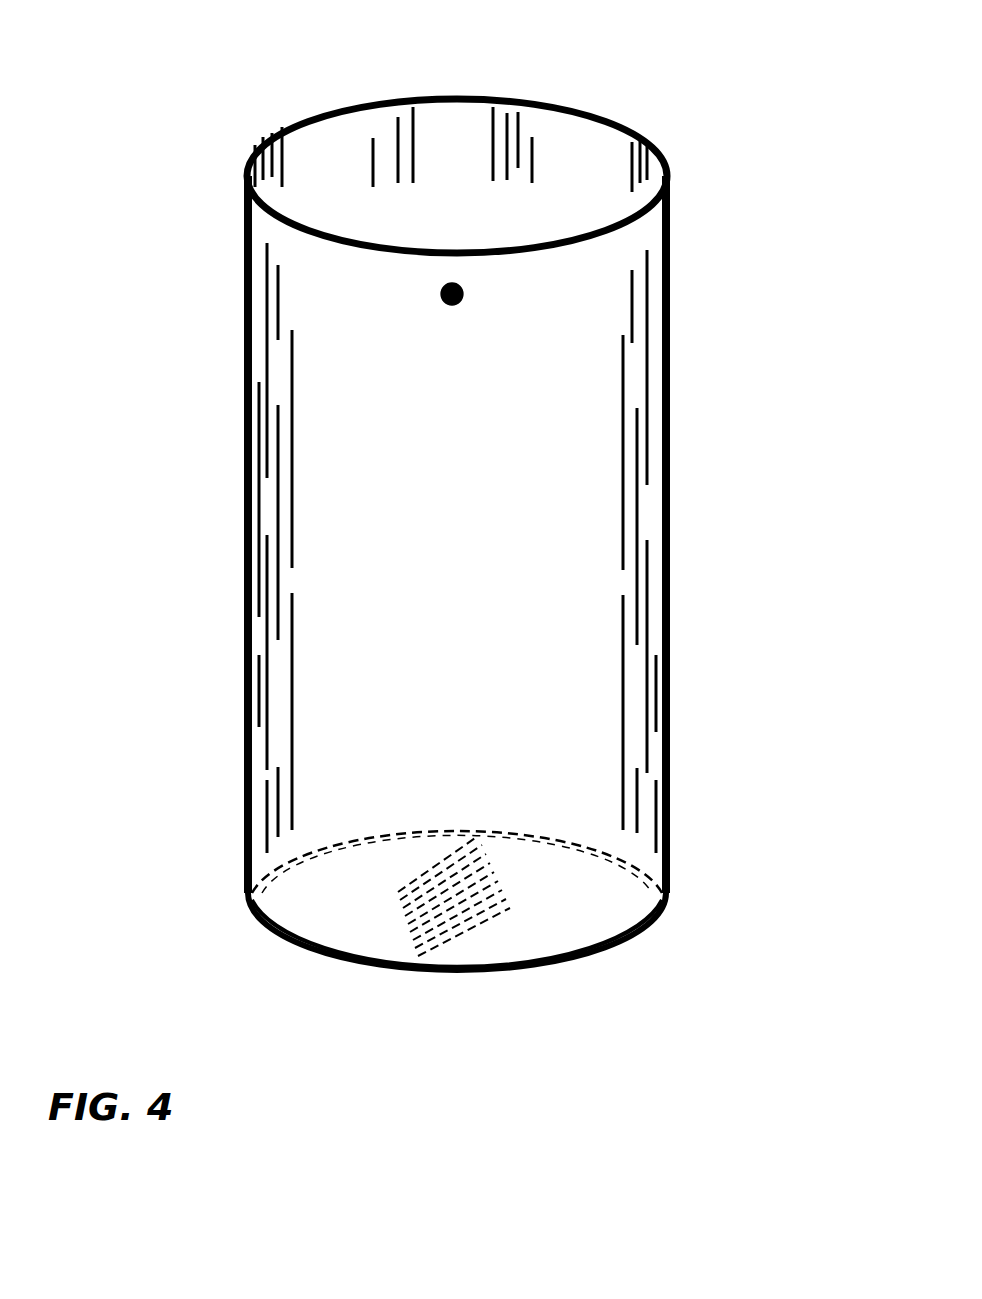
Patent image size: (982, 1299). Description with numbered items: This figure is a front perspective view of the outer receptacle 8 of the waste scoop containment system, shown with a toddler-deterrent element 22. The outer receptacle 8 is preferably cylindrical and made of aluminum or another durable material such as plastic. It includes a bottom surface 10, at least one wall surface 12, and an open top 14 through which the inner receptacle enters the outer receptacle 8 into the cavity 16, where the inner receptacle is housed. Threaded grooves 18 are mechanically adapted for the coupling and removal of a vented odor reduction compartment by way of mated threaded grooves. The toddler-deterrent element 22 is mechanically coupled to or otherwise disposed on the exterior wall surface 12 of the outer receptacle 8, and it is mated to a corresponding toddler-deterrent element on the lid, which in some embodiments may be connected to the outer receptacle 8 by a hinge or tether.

The outer receptacle 8 is at (240, 35).
The bottom surface 10 is at (290, 914).
The wall surface 12 is at (638, 602).
The open top 14 is at (300, 178).
The cavity 16 is at (360, 384).
The threaded grooves 18 is at (596, 840).
The toddler-deterrent element 22 is at (462, 290).